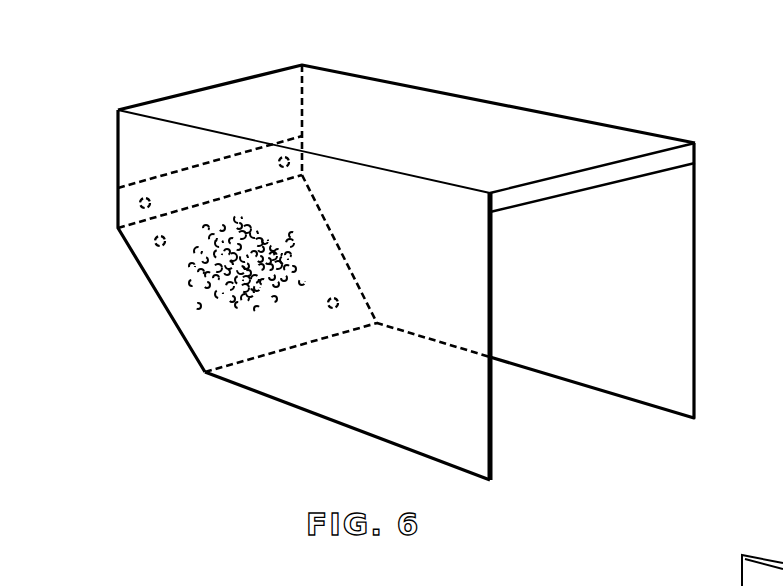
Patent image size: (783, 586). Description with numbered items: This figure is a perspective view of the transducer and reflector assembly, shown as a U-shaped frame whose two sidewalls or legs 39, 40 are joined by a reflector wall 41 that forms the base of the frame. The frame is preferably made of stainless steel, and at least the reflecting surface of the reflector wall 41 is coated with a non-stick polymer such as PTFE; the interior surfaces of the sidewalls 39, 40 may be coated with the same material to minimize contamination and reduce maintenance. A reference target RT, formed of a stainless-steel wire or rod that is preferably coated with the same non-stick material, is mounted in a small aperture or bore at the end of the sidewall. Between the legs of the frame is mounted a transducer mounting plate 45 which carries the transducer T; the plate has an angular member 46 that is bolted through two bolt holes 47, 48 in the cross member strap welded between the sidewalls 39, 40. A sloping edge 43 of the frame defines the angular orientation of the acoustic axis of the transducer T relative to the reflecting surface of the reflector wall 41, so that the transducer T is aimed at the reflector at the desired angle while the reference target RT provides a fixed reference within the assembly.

The sidewall 39 is at (696, 360).
The sidewall 40 is at (493, 431).
The reflector wall 41 is at (527, 118).
The reference target RT is at (638, 163).
The sloping edge 43 is at (320, 207).
The transducer mounting plate 45 is at (175, 326).
The angular member 46 is at (127, 214).
The bolt hole 47 is at (140, 202).
The bolt hole 48 is at (302, 134).
The transducer T is at (288, 252).